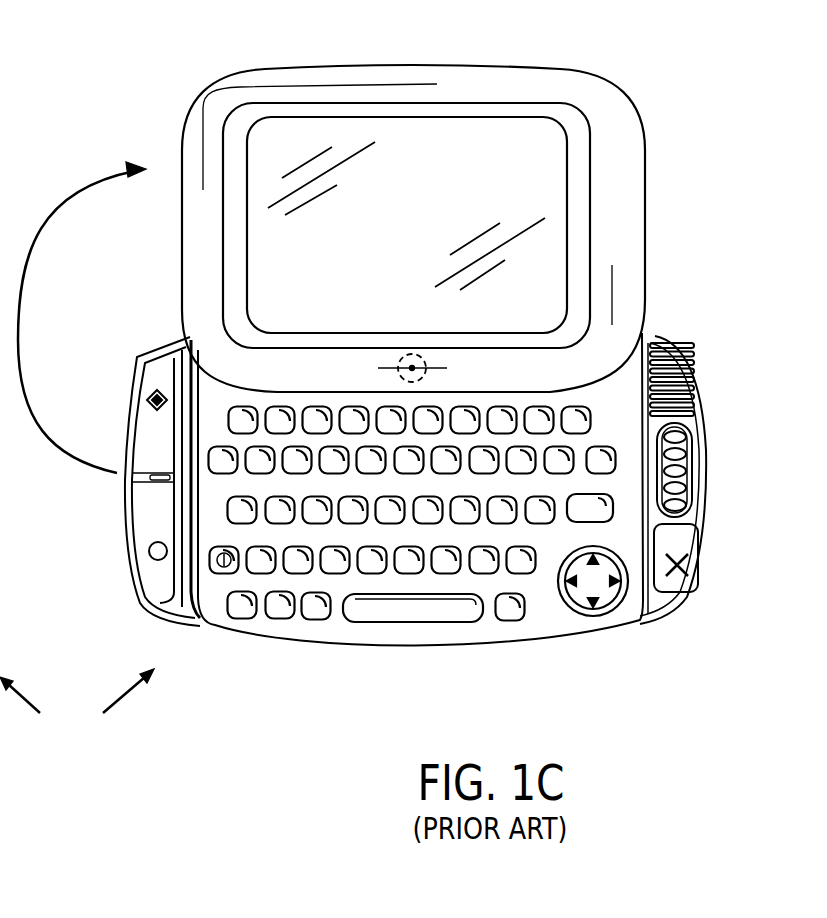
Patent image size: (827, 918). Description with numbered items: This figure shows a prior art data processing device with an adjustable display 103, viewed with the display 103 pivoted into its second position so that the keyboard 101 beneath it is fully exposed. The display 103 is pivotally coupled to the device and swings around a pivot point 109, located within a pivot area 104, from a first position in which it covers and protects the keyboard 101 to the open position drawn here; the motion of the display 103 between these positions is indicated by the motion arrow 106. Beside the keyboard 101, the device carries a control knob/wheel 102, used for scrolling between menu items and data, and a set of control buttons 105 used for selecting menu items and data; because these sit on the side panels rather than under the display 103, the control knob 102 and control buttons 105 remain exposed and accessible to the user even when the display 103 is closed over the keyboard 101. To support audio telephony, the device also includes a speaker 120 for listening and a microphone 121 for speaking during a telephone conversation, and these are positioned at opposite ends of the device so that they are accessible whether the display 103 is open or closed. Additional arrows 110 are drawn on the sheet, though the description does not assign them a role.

The keyboard 101 is at (434, 605).
The control knob/wheel 102 is at (690, 470).
The display 103 is at (636, 186).
The pivot area 104 is at (425, 345).
The control buttons 105 is at (145, 378).
The motion arrow 106 is at (82, 317).
The pivot point 109 is at (405, 352).
The slide direction arrows 110 is at (77, 704).
The speaker 120 is at (697, 373).
The microphone 121 is at (178, 478).